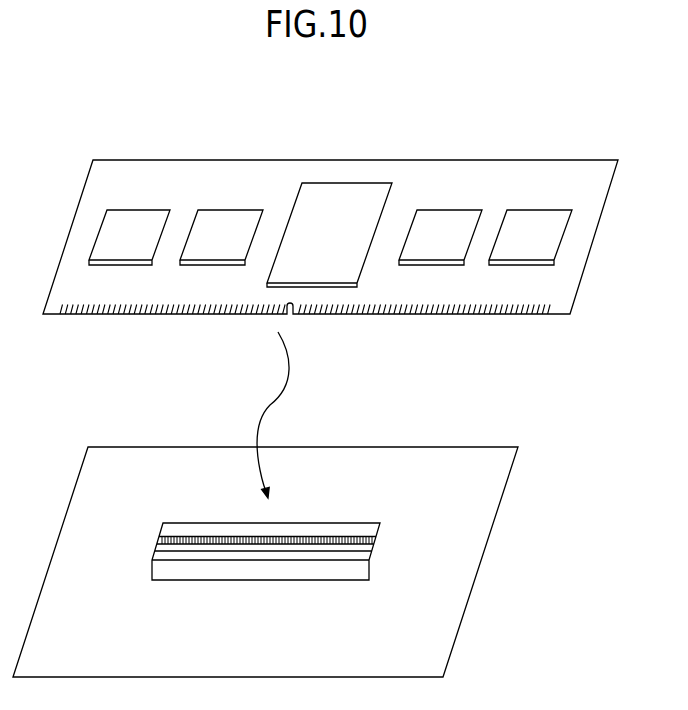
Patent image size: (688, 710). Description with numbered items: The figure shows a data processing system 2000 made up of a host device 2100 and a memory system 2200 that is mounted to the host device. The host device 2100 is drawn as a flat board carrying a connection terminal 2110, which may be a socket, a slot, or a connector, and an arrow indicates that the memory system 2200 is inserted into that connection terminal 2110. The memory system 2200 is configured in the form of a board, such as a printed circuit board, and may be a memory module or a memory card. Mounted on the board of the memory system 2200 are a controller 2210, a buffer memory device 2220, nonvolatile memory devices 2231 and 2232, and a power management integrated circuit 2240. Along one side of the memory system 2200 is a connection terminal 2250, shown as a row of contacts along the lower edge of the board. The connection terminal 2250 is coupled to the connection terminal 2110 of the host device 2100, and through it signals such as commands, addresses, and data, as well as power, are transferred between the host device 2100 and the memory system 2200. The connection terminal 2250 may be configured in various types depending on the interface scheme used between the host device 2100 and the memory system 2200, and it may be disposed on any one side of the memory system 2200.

The data processing system 2000 is at (188, 125).
The host device 2100 is at (265, 562).
The connection terminal 2110 is at (398, 515).
The memory system 2200 is at (330, 237).
The controller 2210 is at (329, 235).
The buffer memory device 2220 is at (221, 237).
The nonvolatile memory device 2231 is at (440, 237).
The nonvolatile memory device 2232 is at (530, 237).
The power management integrated circuit 2240 is at (129, 237).
The connection terminal 2250 is at (77, 315).